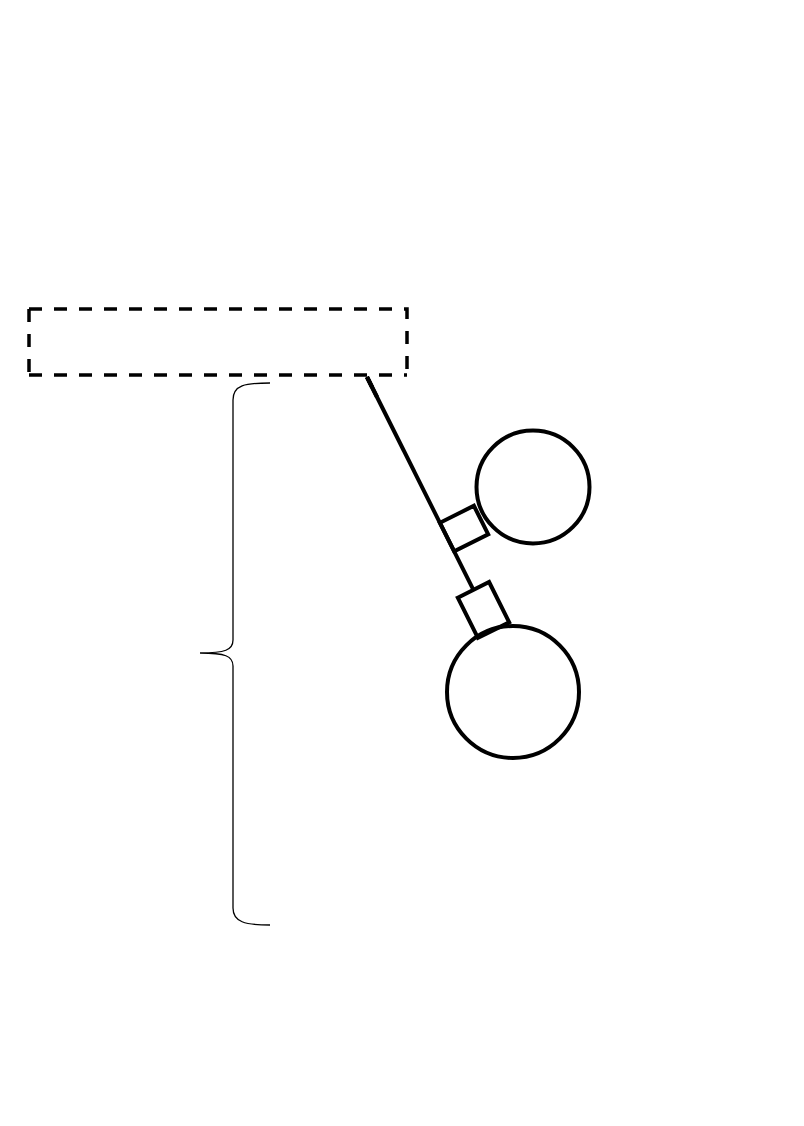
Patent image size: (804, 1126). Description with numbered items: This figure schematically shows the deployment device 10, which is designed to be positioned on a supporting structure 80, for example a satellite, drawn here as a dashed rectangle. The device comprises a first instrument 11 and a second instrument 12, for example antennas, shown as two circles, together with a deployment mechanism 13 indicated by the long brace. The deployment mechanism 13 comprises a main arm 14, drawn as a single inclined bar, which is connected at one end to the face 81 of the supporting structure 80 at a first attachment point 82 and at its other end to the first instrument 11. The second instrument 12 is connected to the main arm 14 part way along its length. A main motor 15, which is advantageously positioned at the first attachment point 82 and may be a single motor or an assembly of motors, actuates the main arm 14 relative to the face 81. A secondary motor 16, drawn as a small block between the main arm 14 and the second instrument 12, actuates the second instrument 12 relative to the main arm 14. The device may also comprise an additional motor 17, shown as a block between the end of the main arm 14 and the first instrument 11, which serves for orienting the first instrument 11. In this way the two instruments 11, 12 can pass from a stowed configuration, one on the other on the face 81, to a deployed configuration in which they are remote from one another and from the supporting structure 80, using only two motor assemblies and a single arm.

The deployment device 10 is at (420, 40).
The supporting structure 80 is at (392, 308).
The face 81 is at (163, 376).
The first attachment point 82 is at (365, 380).
The main arm 14 is at (405, 442).
The main motor 15 is at (373, 386).
The secondary motor 16 is at (458, 525).
The additional motor 17 is at (465, 622).
The second instrument 12 is at (530, 431).
The first instrument 11 is at (497, 759).
The deployment mechanism 13 is at (217, 654).